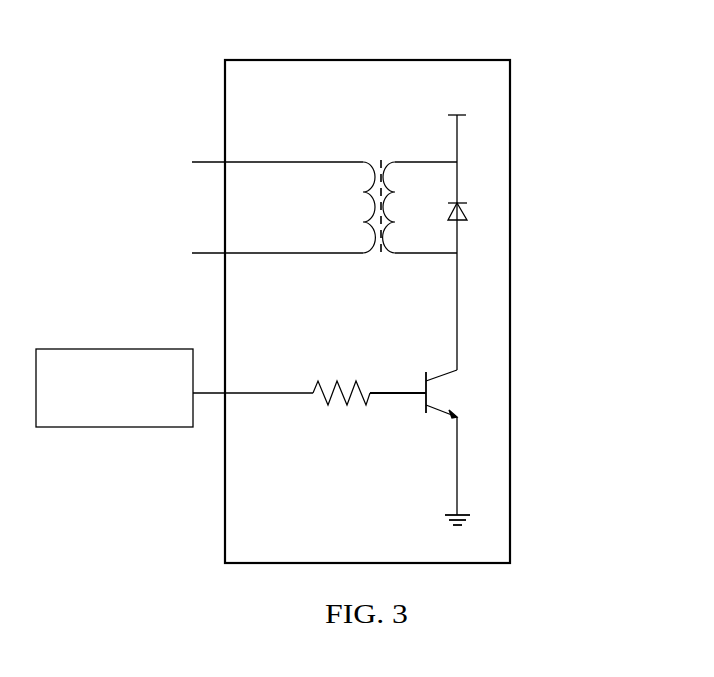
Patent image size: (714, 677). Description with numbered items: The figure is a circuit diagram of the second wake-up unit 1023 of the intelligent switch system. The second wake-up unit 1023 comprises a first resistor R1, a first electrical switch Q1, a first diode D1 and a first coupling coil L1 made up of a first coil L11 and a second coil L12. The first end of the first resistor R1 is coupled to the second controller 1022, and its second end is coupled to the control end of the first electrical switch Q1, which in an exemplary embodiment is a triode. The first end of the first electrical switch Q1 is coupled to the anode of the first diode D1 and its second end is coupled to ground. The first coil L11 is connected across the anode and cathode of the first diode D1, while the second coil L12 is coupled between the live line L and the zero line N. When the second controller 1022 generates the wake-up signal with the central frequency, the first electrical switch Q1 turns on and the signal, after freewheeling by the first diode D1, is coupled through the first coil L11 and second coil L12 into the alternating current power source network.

The second controller 1022 is at (110, 347).
The second wake-up unit 1023 is at (510, 57).
The first coupling coil L1 is at (380, 186).
The first coil L11 is at (346, 207).
The second coil L12 is at (413, 207).
The first diode D1 is at (477, 212).
The first electrical switch Q1 is at (465, 394).
The first resistor R1 is at (341, 373).